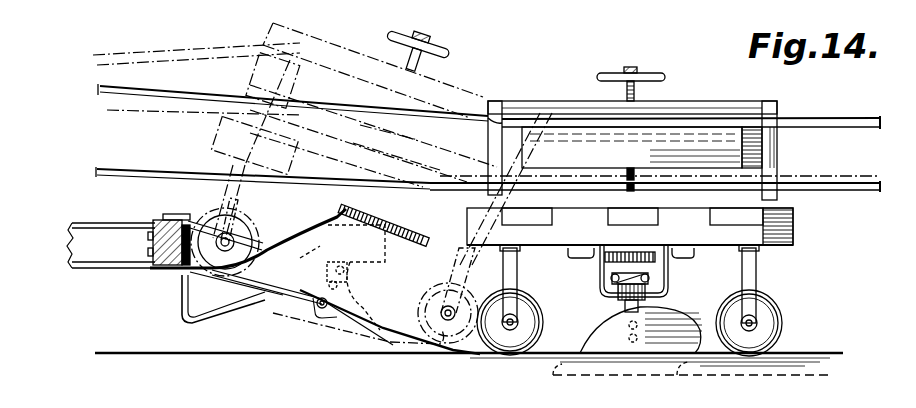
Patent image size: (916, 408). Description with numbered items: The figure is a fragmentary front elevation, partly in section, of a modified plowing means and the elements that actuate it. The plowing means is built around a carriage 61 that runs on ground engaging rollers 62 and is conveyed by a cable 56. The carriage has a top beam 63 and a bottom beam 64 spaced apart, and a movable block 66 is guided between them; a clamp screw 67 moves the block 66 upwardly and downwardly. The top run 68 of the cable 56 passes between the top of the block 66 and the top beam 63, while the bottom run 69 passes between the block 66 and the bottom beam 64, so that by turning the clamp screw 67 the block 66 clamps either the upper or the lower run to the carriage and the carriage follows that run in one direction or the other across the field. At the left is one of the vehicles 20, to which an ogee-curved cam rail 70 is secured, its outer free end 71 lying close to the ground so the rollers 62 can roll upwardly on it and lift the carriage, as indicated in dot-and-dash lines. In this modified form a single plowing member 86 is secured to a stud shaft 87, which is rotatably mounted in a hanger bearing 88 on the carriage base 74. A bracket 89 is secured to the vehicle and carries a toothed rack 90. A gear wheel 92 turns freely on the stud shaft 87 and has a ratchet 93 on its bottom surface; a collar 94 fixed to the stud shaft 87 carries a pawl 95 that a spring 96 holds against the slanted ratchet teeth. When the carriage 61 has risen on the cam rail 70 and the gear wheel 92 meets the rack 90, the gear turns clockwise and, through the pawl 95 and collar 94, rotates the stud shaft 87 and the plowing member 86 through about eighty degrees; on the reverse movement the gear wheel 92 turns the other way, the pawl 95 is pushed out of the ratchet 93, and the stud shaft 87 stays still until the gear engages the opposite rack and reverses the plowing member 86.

The vehicle 20 is at (108, 262).
The cable 56 is at (379, 98).
The carriage 61 is at (784, 155).
The ground engaging rollers 62 is at (541, 311).
The top beam 63 is at (722, 108).
The bottom beam 64 is at (677, 203).
The movable block 66 is at (655, 160).
The clamp screw 67 is at (637, 94).
The top run of the cable 68 is at (808, 119).
The bottom run of the cable 69 is at (836, 188).
The cam rail 70 is at (261, 296).
The outer free end 71 is at (406, 325).
The carriage base 74 is at (794, 229).
The plowing member 86 is at (328, 323).
The stud shaft 87 is at (334, 271).
The hanger bearing 88 is at (343, 167).
The bracket 89 is at (300, 233).
The toothed rack 90 is at (398, 244).
The gear wheel 92 is at (404, 222).
The ratchet 93 is at (335, 213).
The collar 94 is at (353, 260).
The pawl 95 is at (312, 250).
The spring 96 is at (380, 252).